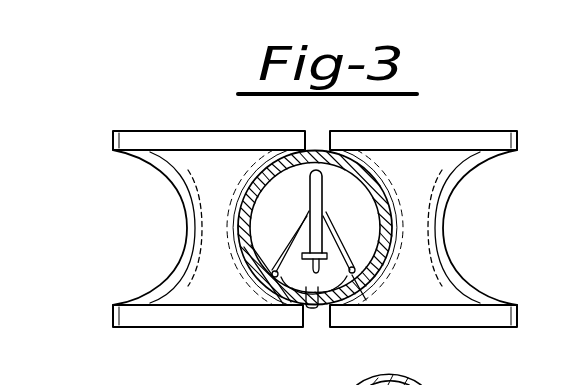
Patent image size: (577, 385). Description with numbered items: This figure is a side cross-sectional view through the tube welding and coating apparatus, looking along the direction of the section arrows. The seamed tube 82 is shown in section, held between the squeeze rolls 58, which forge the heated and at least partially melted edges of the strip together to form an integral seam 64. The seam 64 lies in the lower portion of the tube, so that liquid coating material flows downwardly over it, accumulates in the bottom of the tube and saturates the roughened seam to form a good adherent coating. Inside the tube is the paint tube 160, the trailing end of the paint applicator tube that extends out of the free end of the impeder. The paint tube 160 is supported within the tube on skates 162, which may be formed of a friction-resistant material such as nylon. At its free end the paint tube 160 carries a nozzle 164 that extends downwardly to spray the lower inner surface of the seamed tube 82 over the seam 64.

The squeeze rolls 58 is at (412, 272).
The seamed tube 82 is at (360, 173).
The paint tube 160 is at (316, 194).
The skates 162 is at (281, 290).
The nozzle 164 is at (338, 276).
The seam 64 is at (317, 308).